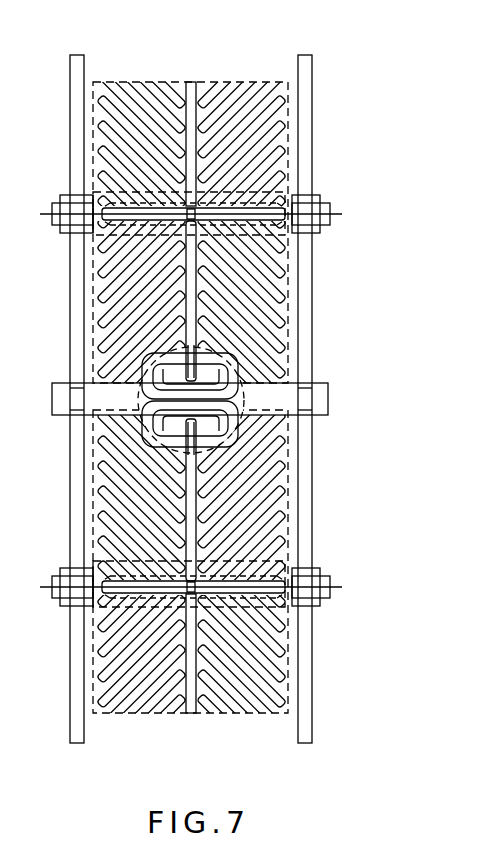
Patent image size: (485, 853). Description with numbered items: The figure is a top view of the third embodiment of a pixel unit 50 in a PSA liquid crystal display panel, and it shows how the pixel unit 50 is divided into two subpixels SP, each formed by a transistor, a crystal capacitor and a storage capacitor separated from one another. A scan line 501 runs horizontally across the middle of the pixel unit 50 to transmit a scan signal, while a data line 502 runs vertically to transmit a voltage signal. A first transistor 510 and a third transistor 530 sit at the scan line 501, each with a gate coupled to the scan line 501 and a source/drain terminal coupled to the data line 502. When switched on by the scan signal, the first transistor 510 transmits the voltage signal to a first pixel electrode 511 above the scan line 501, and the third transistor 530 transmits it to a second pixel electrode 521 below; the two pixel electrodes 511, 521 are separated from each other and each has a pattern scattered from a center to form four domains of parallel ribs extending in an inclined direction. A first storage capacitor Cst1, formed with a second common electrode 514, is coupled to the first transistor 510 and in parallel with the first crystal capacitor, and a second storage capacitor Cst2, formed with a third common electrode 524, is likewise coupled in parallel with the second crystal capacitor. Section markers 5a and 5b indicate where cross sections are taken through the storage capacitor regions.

The pixel unit 50 is at (369, 79).
The subpixel SP is at (95, 310).
The data line 502 is at (312, 318).
The first pixel electrode 511 is at (280, 99).
The second pixel electrode 521 is at (278, 520).
The scan line 501 is at (280, 400).
The first transistor 510 is at (145, 362).
The third transistor 530 is at (262, 428).
The second common electrode 514 is at (323, 209).
The first storage capacitor Cst1 is at (290, 191).
The third common electrode 524 is at (323, 582).
The second storage capacitor Cst2 is at (290, 566).
The section line 5a-5a' 5a is at (342, 248).
The section line 5b-5b' 5b is at (342, 620).